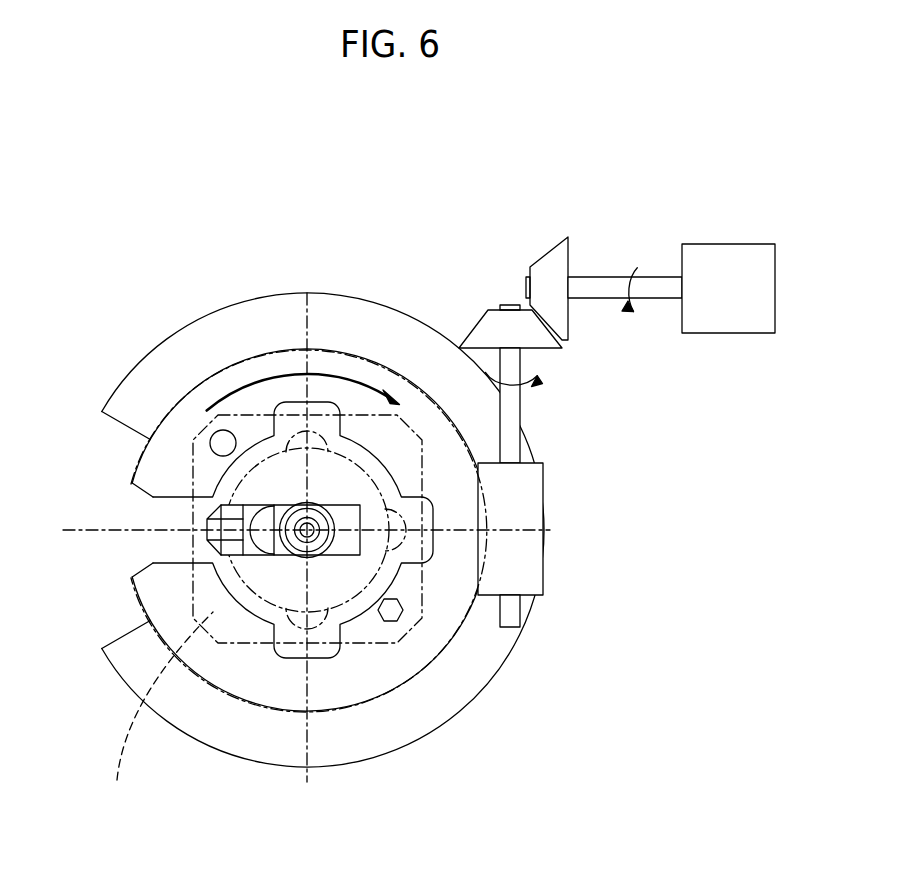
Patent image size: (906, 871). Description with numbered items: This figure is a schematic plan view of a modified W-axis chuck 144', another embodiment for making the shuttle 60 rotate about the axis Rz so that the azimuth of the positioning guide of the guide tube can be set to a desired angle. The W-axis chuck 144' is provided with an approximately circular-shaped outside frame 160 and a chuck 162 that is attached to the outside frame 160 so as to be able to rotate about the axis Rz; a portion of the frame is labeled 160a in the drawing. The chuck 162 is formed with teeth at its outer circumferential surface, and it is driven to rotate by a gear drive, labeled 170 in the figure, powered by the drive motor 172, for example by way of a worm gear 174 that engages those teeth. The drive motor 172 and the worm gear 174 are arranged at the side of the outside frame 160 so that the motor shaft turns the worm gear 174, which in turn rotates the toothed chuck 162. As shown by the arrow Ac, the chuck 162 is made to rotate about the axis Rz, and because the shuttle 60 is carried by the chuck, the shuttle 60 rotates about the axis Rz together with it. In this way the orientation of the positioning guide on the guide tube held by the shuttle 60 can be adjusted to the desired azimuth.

The W-axis chuck 144' is at (90, 267).
The outside frame 160 is at (223, 322).
The inner peripheral surface of fixed ring 160a is at (437, 662).
The chuck 162 is at (426, 410).
The gear mechanism 170 is at (544, 232).
The drive motor 172 is at (722, 243).
The worm gear 174 is at (532, 500).
The shuttle 60 is at (152, 713).
The axis Rz is at (307, 530).
The arrow Ac is at (270, 378).